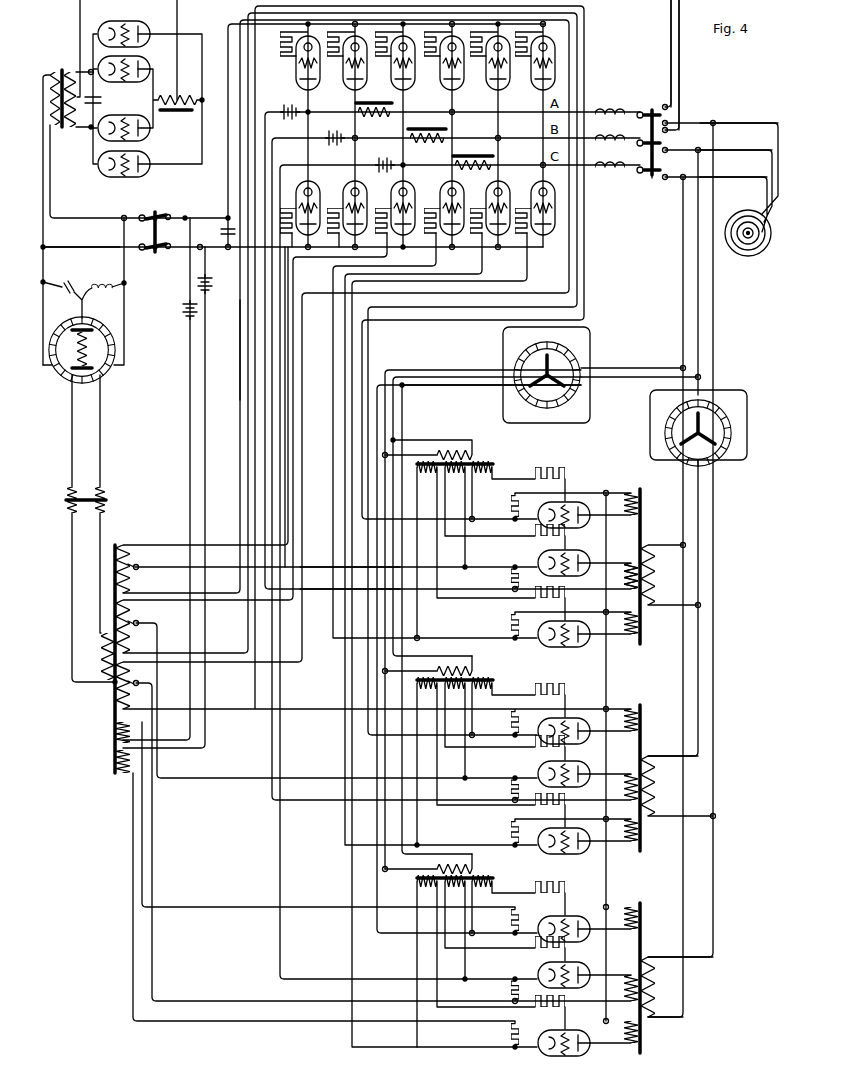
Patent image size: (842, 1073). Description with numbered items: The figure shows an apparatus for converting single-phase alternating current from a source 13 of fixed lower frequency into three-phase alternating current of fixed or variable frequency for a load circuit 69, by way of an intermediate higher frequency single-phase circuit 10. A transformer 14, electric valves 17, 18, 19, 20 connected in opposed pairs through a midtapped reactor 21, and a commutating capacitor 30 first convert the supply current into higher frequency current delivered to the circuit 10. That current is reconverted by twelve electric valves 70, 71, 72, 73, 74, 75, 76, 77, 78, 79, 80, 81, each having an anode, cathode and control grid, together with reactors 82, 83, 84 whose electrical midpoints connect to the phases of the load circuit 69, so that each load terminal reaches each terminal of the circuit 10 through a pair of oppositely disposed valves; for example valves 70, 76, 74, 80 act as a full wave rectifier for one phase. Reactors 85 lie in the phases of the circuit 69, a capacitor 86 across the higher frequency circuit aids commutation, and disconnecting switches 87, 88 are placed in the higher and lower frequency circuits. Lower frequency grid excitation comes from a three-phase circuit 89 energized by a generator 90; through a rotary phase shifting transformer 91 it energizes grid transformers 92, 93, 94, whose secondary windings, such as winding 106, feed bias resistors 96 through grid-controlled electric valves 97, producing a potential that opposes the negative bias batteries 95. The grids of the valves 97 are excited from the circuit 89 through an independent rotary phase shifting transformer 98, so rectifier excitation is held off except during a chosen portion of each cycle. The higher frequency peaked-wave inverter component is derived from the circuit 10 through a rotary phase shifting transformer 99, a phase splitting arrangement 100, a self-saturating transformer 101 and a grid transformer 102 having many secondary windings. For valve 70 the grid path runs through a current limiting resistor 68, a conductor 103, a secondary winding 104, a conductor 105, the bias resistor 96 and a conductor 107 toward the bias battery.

The higher frequency alternating-current circuit 10 is at (68, 247).
The source of lower frequency alternating current 13 is at (103, 6).
The transformer 14 is at (60, 70).
The electric valve 17 is at (138, 26).
The electric valve 18 is at (140, 65).
The electric valve 19 is at (142, 172).
The electric valve 20 is at (142, 136).
The midtapped reactor 21 is at (178, 112).
The commutating capacitor 30 is at (102, 101).
The current limiting resistor 68 is at (279, 36).
The alternating-current circuit 69 is at (678, 18).
The electric valve 70 is at (295, 78).
The electric valve 71 is at (342, 75).
The electric valve 72 is at (390, 78).
The electric valve 73 is at (439, 78).
The electric valve 74 is at (486, 78).
The electric valve 75 is at (531, 78).
The electric valve 76 is at (488, 192).
The electric valve 77 is at (532, 192).
The electric valve 78 is at (440, 194).
The electric valve 79 is at (392, 194).
The electric valve 80 is at (297, 194).
The electric valve 81 is at (343, 194).
The reactor 82 is at (370, 117).
The reactor 83 is at (420, 143).
The reactor 84 is at (468, 170).
The reactors 85 is at (640, 152).
The capacitor 86 is at (220, 232).
The disconnecting switch 87 is at (155, 243).
The disconnecting switch 88 is at (652, 176).
The three-phase alternating-current circuit 89 is at (800, 176).
The alternating-current generator 90 is at (756, 253).
The rotary phase shifting transformer 91 is at (737, 418).
The grid transformer 92 is at (645, 618).
The grid transformer 93 is at (645, 824).
The grid transformer 94 is at (645, 1024).
The bias battery 95 is at (300, 112).
The bias resistor 96 is at (509, 504).
The electric valve 97 is at (576, 528).
The rotary phase shifting transformer 98 is at (565, 410).
The rotary phase shifting transformer 99 is at (108, 372).
The phase splitting arrangement 100 is at (68, 285).
The self-saturating transformer 101 is at (106, 499).
The grid transformer 102 is at (110, 683).
The conductor 103 is at (238, 393).
The secondary winding 104 is at (130, 582).
The conductor 105 is at (318, 566).
The secondary winding 106 is at (624, 572).
The conductor 107 is at (318, 590).